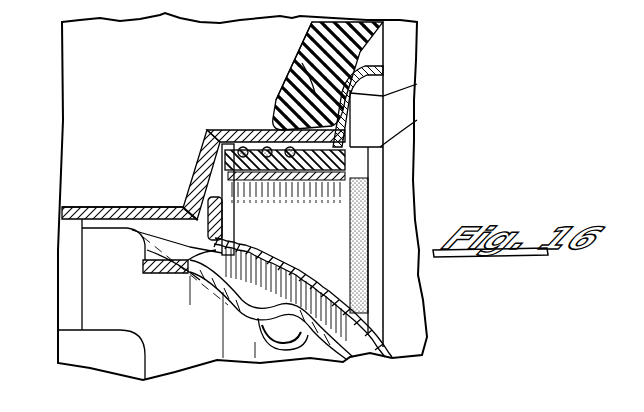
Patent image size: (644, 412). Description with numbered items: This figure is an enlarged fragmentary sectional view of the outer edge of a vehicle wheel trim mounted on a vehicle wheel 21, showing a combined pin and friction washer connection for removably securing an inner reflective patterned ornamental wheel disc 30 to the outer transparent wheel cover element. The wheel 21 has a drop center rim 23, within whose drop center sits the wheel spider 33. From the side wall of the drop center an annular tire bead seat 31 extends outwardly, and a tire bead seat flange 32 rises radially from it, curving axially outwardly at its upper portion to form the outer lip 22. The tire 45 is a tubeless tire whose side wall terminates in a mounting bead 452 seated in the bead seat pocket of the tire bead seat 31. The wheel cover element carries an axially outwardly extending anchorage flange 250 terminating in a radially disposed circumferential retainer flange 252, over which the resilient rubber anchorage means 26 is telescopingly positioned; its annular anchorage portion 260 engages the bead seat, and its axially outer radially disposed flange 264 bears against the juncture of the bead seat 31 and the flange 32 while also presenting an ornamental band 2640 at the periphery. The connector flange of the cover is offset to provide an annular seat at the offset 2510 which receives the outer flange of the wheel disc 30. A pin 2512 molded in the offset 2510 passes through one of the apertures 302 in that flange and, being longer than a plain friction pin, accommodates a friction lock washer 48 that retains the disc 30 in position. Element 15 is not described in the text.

The housing 15 is at (397, 352).
The vehicle wheel 21 is at (279, 342).
The outer lip 22 is at (383, 66).
The drop center rim 23 is at (78, 209).
The resilient anchorage means 26 is at (212, 162).
The inner reflective patterned ornamental wheel disc 30 is at (343, 347).
The tire bead seat 31 is at (283, 100).
The tire bead seat flange 32 is at (417, 84).
The wheel spider 33 is at (222, 300).
The tire 45 is at (383, 50).
The friction lock washer 48 is at (210, 197).
The anchorage flange 250 is at (370, 208).
The retainer flange 252 is at (368, 163).
The anchorage portion 260 is at (285, 182).
The axially outer radially disposed flange 264 is at (368, 180).
The apertures 302 is at (143, 260).
The mounting bead 452 is at (315, 93).
The offset 2510 is at (235, 225).
The pin 2512 is at (187, 212).
The ornamental band 2640 is at (417, 120).